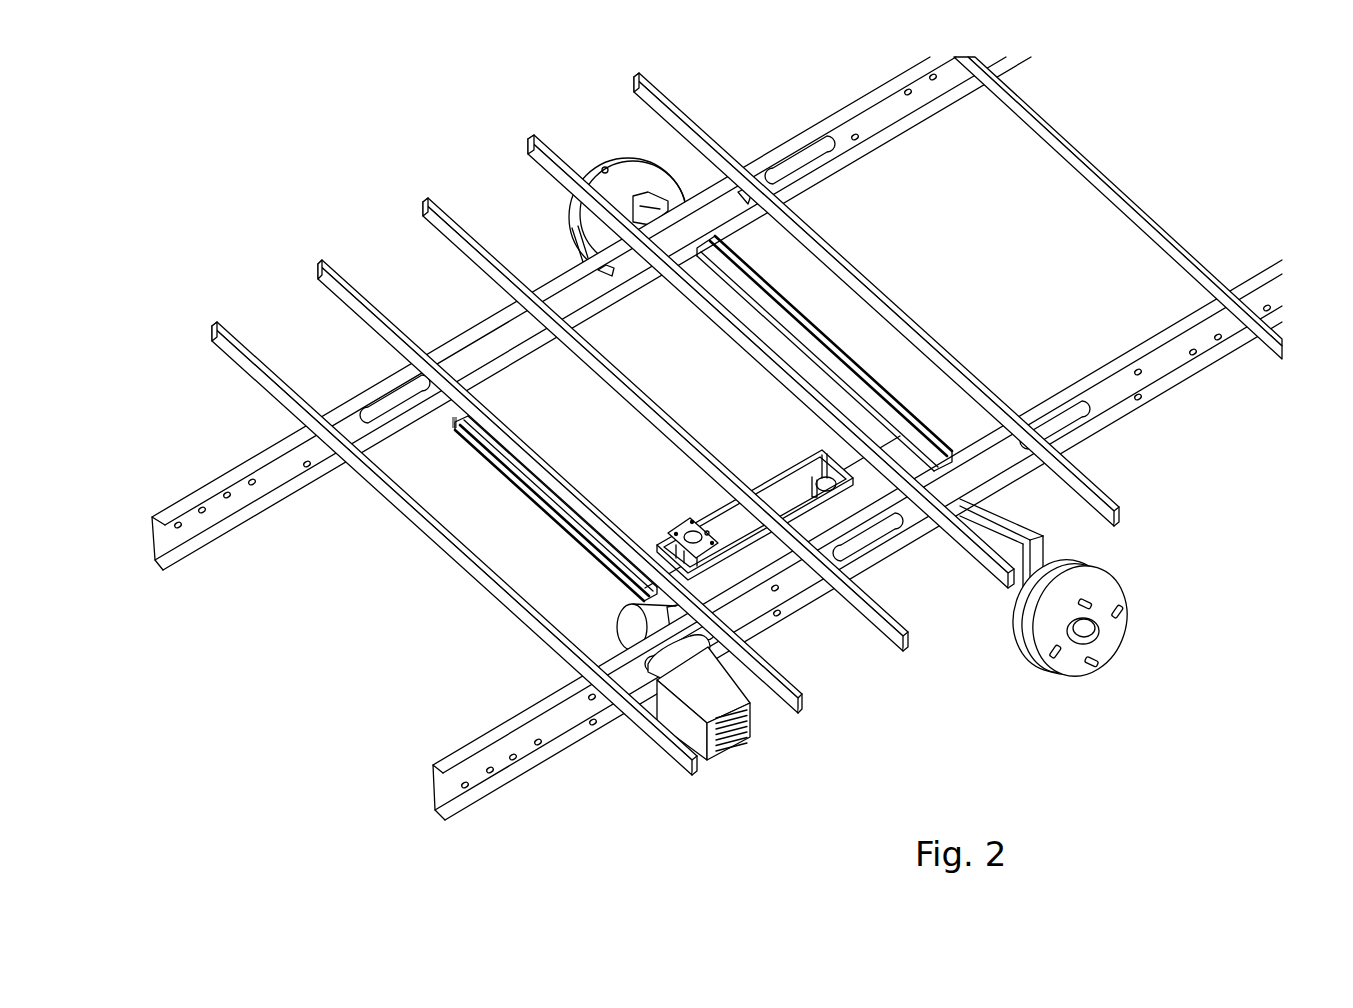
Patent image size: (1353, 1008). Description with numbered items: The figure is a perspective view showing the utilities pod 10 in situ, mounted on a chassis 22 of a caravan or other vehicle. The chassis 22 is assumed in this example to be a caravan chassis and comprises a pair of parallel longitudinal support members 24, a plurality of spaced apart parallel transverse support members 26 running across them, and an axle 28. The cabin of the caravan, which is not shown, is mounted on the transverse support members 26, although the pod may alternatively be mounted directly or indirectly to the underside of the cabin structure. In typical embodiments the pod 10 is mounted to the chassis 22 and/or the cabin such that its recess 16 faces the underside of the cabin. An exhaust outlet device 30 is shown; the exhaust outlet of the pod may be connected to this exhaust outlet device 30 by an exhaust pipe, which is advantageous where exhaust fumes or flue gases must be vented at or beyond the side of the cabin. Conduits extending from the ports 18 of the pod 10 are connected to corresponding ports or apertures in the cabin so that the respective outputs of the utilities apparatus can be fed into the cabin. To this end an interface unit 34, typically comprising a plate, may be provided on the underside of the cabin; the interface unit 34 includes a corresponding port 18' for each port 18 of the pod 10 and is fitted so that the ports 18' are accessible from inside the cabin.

The pod 10 is at (513, 500).
The recess 16 is at (790, 503).
The port 18 is at (793, 451).
The port 18' is at (810, 622).
The chassis 22 is at (356, 371).
The longitudinal support member 24 is at (1102, 375).
The transverse support member 26 is at (512, 606).
The axle 28 is at (1037, 552).
The exhaust outlet device 30 is at (735, 738).
The interface unit 34 is at (670, 507).